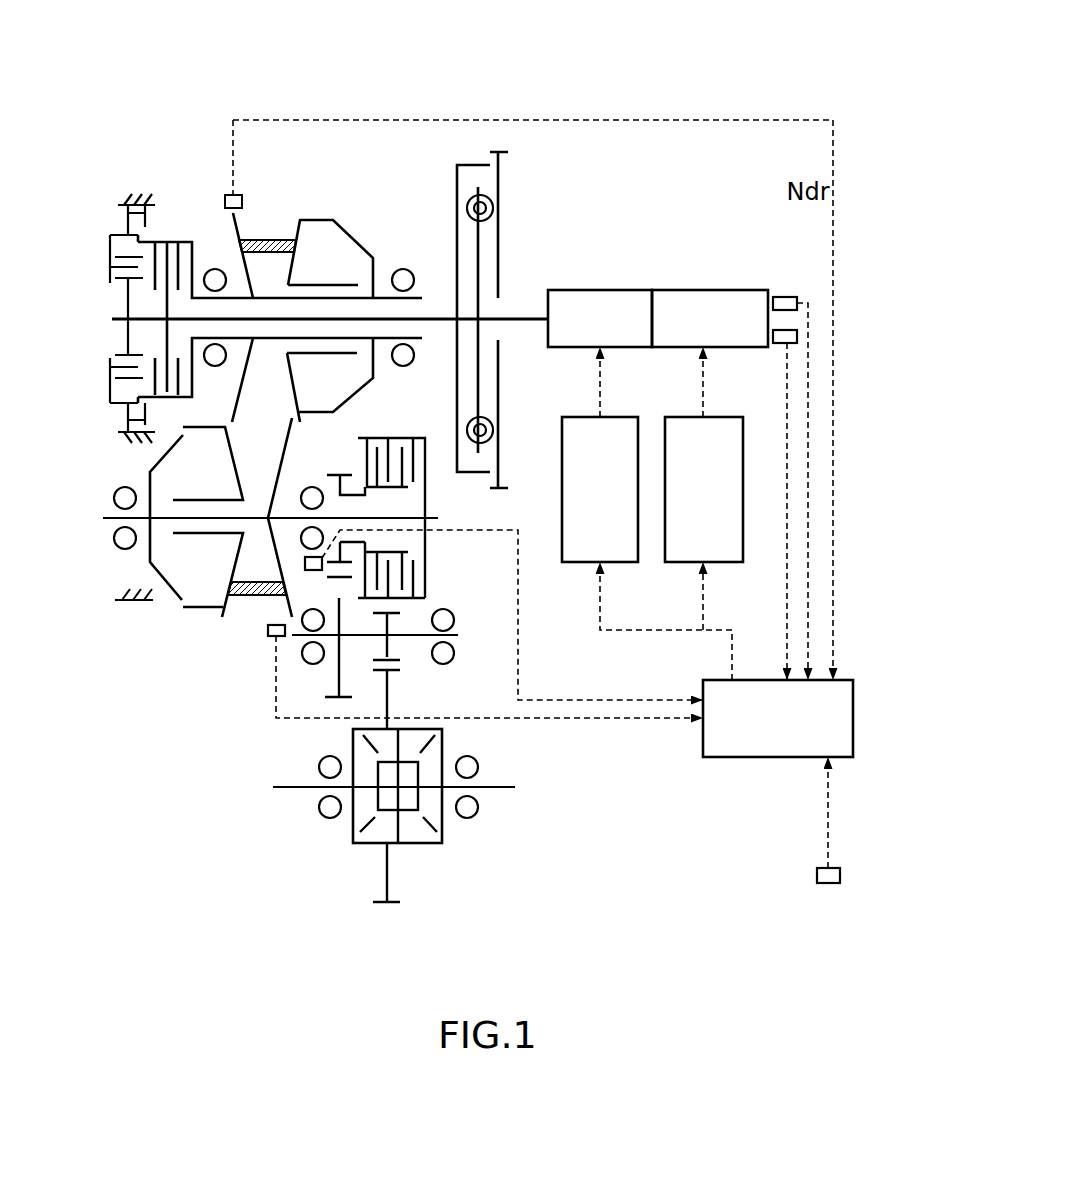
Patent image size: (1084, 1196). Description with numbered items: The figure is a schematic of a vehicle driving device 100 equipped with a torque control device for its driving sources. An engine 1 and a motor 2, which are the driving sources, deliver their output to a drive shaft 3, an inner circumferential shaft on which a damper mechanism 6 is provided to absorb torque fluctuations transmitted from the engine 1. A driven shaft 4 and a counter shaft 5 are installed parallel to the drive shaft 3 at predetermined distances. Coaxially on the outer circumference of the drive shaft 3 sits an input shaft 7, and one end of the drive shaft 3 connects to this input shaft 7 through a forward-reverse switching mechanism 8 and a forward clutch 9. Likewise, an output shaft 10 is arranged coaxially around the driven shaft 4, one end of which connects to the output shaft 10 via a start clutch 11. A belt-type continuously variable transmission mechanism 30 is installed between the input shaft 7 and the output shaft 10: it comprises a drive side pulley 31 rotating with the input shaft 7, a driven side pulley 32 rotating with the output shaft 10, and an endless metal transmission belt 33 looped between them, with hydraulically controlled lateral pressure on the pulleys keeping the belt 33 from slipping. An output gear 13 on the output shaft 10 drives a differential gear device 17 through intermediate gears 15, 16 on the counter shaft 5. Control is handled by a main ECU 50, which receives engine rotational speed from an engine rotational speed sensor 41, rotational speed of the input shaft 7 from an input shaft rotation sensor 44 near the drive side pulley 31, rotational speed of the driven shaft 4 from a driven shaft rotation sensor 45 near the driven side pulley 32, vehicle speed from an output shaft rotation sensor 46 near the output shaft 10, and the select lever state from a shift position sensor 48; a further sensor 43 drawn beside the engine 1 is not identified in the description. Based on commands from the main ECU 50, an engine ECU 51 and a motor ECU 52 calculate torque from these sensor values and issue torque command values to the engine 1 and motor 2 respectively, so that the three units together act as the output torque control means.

The driving device 100 is at (347, 103).
The engine 1 is at (703, 290).
The motor 2 is at (600, 290).
The drive shaft 3 is at (432, 318).
The driven shaft 4 is at (208, 520).
The counter shaft 5 is at (409, 635).
The damper mechanism 6 is at (509, 191).
The input shaft 7 is at (386, 298).
The forward-reverse switching mechanism 8 is at (116, 409).
The forward clutch 9 is at (168, 234).
The output shaft 10 is at (360, 488).
The start clutch 11 is at (431, 581).
The output gear 13 is at (342, 475).
The intermediate gear 15 is at (330, 680).
The intermediate gear 16 is at (390, 651).
The differential gear device 17 is at (346, 853).
The belt-type continuously variable transmission mechanism 30 is at (257, 172).
The drive side pulley 31 is at (273, 199).
The driven side pulley 32 is at (246, 624).
The endless transmission belt 33 is at (280, 239).
The engine rotational speed sensor 41 is at (782, 297).
The motor rotation speed sensor 43 is at (781, 344).
The input shaft rotation sensor 44 is at (225, 202).
The driven shaft rotation sensor 45 is at (273, 642).
The output shaft rotation sensor 46 is at (306, 566).
The shift position sensor 48 is at (817, 877).
The main ECU 50 is at (853, 720).
The engine ECU 51 is at (730, 563).
The motor ECU 52 is at (568, 563).